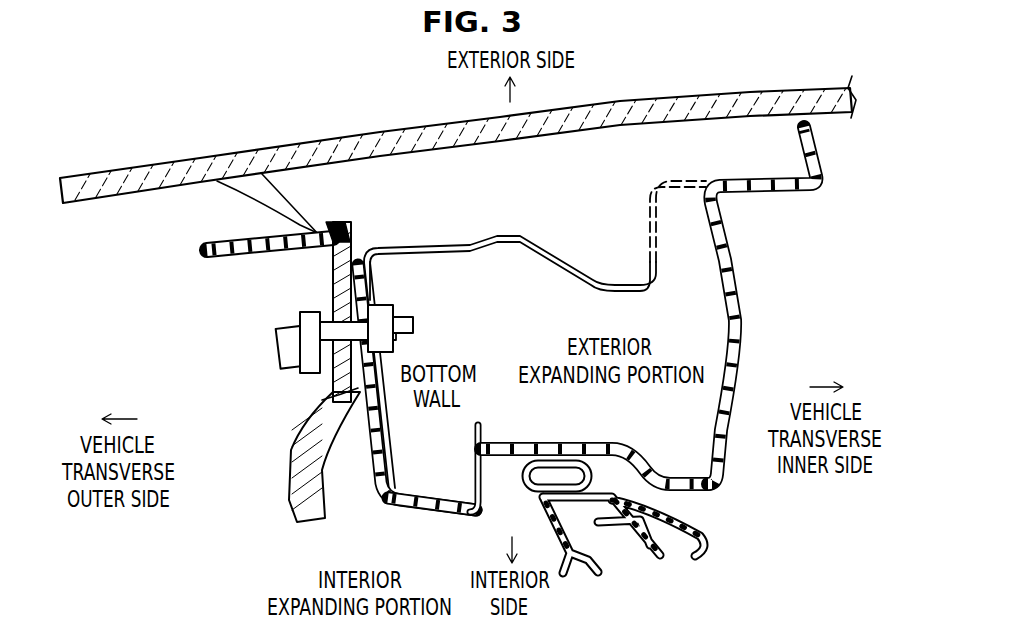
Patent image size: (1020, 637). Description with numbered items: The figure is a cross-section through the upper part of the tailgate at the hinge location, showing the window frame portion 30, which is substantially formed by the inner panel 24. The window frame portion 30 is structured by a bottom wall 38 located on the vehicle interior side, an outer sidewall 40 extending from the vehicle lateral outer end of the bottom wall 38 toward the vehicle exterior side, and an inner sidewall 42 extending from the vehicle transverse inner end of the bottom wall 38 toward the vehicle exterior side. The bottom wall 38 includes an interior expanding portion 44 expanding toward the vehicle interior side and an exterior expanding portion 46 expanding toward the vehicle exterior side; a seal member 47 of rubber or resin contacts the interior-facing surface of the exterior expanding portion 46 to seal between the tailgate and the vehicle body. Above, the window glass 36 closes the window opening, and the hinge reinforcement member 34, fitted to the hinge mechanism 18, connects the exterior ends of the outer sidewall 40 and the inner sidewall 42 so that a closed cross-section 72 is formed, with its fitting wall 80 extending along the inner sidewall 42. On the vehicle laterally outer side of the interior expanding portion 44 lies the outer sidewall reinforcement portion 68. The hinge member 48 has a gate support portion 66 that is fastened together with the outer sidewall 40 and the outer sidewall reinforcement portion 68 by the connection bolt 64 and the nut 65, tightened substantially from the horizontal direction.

The window glass 36 is at (345, 135).
The hinge reinforcement member 34 is at (507, 225).
The fitting wall 80 is at (712, 178).
The window frame portion 30 is at (613, 344).
The inner panel 24 is at (579, 344).
The hinge mechanism 18 is at (311, 304).
The connection bolt 64 is at (278, 345).
The nut 65 is at (392, 314).
The hinge member 48 is at (310, 374).
The outer sidewall reinforcement portion 68 is at (358, 392).
The gate support portion 66 is at (288, 458).
The closed cross-section 72 is at (518, 343).
The outer sidewall 40 is at (376, 447).
The interior expanding portion 44 is at (422, 511).
The bottom wall 38 is at (477, 447).
The exterior expanding portion 46 is at (587, 443).
The inner sidewall 42 is at (741, 359).
The seal member 47 is at (719, 538).